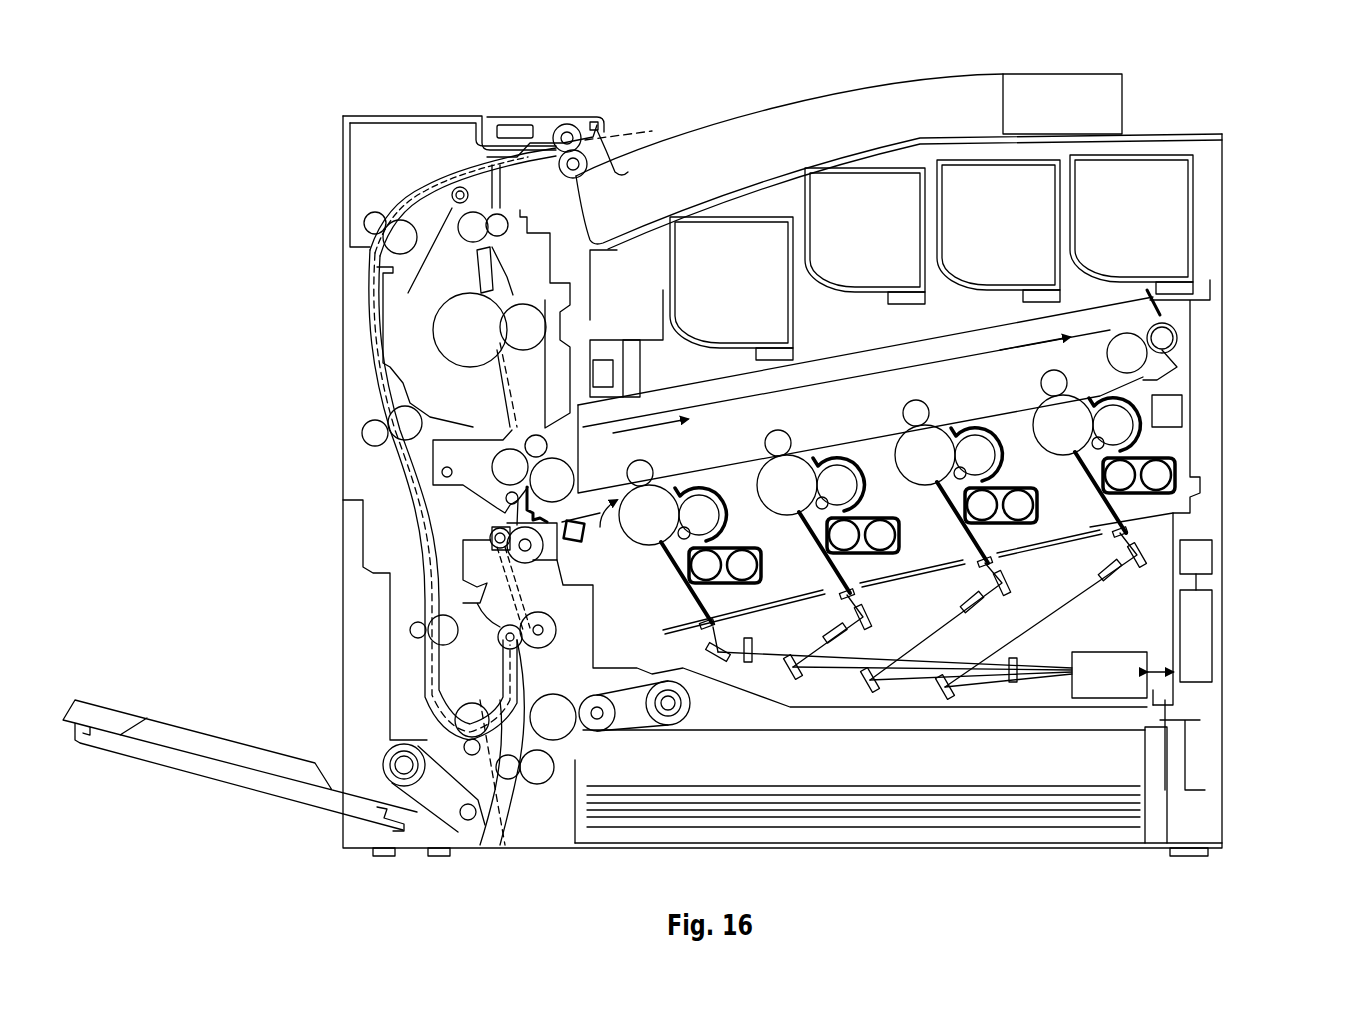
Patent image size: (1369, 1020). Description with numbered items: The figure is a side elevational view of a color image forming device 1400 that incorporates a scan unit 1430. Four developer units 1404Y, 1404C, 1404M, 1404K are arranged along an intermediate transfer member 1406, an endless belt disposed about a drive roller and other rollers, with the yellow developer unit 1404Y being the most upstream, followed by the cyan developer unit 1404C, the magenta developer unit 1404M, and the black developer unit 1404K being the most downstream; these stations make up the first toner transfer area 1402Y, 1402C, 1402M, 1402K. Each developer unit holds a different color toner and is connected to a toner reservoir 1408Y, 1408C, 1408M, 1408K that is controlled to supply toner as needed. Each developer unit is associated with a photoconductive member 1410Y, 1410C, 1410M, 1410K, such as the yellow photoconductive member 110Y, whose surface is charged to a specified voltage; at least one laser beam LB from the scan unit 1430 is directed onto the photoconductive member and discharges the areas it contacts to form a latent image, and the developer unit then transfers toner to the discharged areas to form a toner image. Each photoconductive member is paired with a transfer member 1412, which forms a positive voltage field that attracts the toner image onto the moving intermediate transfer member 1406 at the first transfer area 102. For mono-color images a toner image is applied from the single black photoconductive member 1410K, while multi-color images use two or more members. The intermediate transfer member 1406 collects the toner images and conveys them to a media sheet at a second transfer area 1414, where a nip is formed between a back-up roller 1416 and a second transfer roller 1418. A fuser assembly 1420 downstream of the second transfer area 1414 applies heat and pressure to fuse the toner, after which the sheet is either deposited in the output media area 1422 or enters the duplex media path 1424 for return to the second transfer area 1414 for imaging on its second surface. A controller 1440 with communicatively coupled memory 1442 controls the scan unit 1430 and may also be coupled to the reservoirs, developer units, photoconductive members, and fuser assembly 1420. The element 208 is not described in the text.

The image forming device 1400 is at (270, 128).
The first transfer area 102 is at (1268, 362).
The output media area 1422 is at (720, 150).
The toner reservoir 1408K is at (708, 307).
The toner reservoir 1408M is at (865, 236).
The toner reservoir 1408C is at (998, 231).
The toner reservoir 1408Y is at (1131, 224).
The intermediate transfer member 1406 is at (953, 357).
The transfer member 1412 is at (624, 478).
The first toner transfer area 1402K is at (627, 526).
The first toner transfer area 1402M is at (755, 472).
The first toner transfer area 1402C is at (897, 450).
The first toner transfer area 1402Y is at (1025, 418).
The photoconductive member 110Y is at (1061, 425).
The developer unit 1404K is at (697, 485).
The developer unit 1404M is at (837, 456).
The developer unit 1404C is at (1023, 463).
The developer unit 1404Y is at (973, 423).
The photoconductive member 1410K is at (652, 537).
The photoconductive member 1410M is at (787, 530).
The photoconductive member 1410C is at (920, 473).
The photoconductive member 1410Y is at (1100, 492).
The sensor 208 is at (1183, 407).
The scan unit 1430 is at (945, 657).
The laser beam LB is at (762, 650).
The second transfer area 1414 is at (490, 518).
The back-up roller 1416 is at (575, 460).
The second transfer roller 1418 is at (503, 463).
The fuser assembly 1420 is at (465, 288).
The duplex media path 1424 is at (372, 370).
The controller 1440 is at (1202, 622).
The memory 1442 is at (1203, 560).